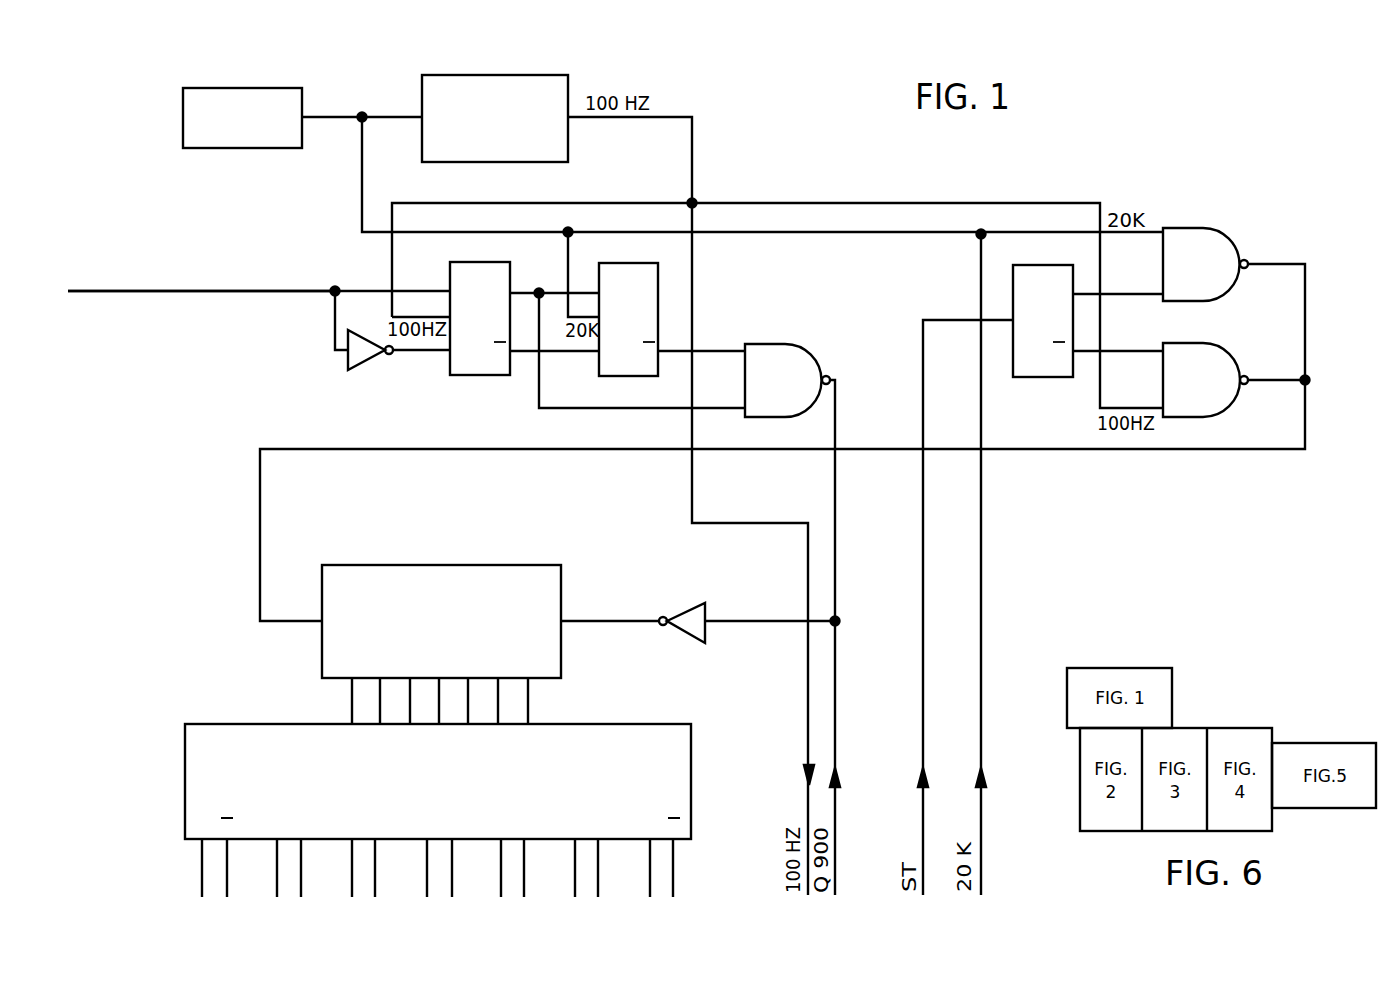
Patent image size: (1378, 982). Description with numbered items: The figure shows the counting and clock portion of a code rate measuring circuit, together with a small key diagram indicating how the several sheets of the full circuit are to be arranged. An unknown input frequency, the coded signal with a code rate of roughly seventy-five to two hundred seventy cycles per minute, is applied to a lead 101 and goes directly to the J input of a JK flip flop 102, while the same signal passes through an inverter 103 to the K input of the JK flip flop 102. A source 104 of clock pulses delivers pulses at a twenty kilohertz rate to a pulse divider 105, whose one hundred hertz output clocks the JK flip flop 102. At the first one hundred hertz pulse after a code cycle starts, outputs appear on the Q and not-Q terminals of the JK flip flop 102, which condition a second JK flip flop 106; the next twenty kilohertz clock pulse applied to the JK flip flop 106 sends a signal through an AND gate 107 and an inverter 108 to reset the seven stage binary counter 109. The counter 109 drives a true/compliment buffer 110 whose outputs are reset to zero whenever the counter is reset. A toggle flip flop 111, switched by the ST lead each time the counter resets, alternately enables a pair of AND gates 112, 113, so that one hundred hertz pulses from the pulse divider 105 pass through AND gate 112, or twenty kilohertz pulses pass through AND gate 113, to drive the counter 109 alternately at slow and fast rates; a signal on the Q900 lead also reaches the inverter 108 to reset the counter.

The lead 101 is at (72, 285).
The JK flip flop 102 is at (489, 263).
The inverter 103 is at (351, 366).
The source of clock pulses 104 is at (255, 87).
The pulse divider 105 is at (507, 74).
The JK flip flop 106 is at (622, 262).
The AND gate 107 is at (795, 391).
The inverter 108 is at (681, 603).
The seven stage binary counter 109 is at (458, 564).
The true/compliment buffer 110 is at (220, 724).
The toggle flip flop 111 is at (1043, 378).
The AND gate 112 is at (1205, 393).
The AND gate 113 is at (1208, 278).